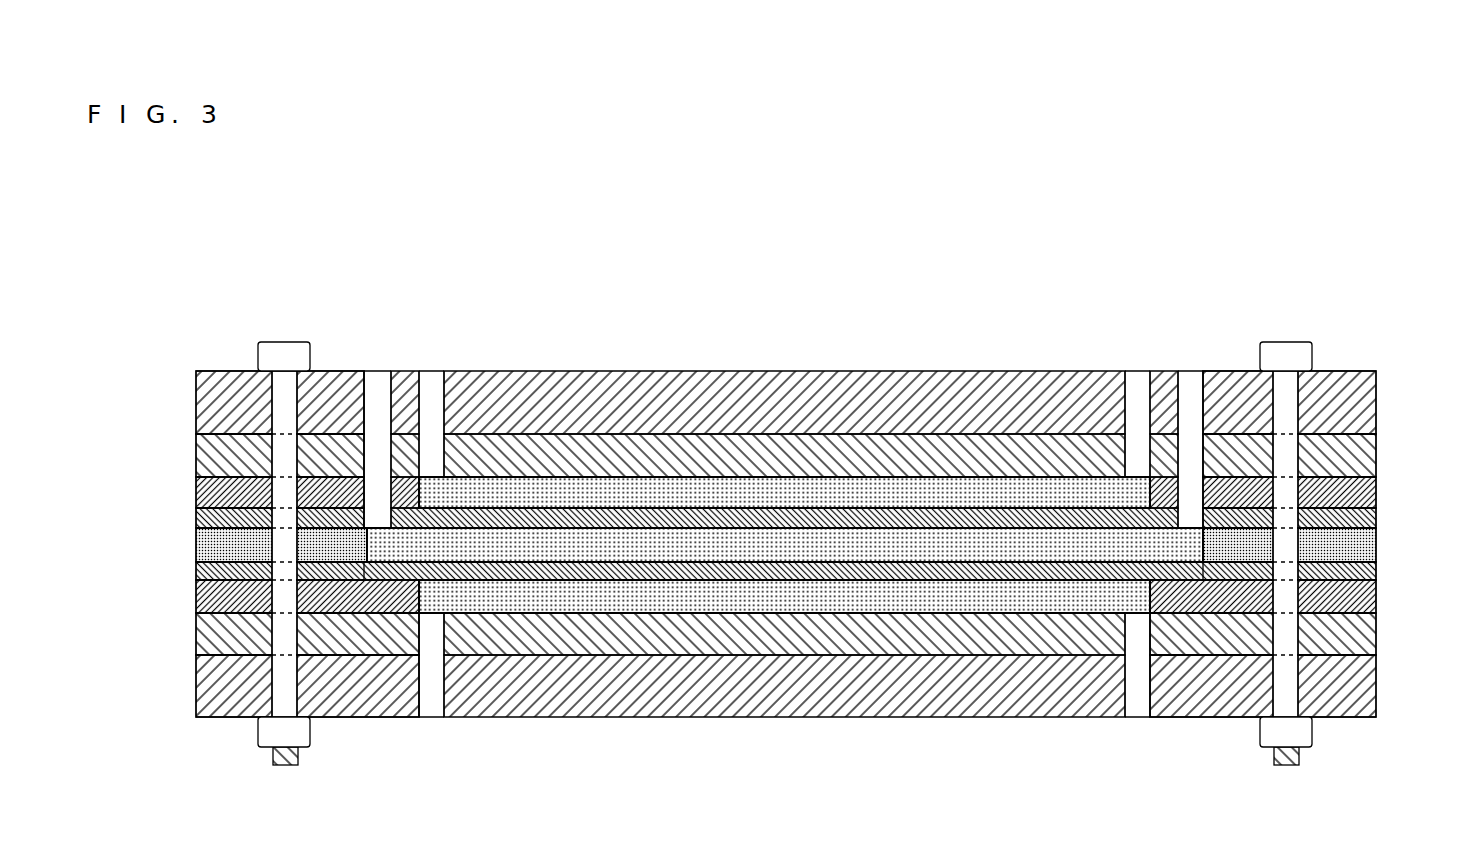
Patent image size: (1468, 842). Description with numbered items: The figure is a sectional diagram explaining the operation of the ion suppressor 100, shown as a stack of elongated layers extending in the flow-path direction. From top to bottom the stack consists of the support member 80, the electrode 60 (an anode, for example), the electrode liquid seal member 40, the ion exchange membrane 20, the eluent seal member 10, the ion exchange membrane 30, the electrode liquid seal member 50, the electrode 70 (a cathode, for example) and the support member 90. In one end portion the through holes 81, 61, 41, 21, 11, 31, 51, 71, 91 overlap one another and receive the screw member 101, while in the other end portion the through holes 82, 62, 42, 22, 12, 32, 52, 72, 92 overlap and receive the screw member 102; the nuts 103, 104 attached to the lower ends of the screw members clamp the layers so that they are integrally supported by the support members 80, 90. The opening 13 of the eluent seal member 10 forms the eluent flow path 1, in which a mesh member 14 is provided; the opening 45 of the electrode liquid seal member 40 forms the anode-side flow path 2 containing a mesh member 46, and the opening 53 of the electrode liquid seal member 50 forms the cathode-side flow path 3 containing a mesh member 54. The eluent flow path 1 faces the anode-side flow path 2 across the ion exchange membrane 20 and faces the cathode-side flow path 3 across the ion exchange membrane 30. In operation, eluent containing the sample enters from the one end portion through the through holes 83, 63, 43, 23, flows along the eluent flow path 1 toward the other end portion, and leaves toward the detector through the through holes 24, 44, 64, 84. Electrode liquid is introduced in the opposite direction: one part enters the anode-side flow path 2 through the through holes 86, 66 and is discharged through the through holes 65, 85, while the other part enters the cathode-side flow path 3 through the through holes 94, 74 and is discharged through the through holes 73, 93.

The eluent flow path 1 is at (831, 555).
The anode-side flow path 2 is at (813, 487).
The cathode-side flow path 3 is at (891, 603).
The eluent seal member 10 is at (350, 548).
The through hole 11 is at (288, 541).
The through hole 12 is at (1281, 541).
The opening 13 is at (727, 528).
The mesh member 14 is at (746, 542).
The ion exchange membrane 20 is at (985, 522).
The through hole 21 is at (288, 513).
The through hole 22 is at (1281, 513).
The through hole 23 is at (378, 520).
The through hole 24 is at (1203, 518).
The ion exchange membrane 30 is at (613, 572).
The through hole 31 is at (288, 568).
The through hole 32 is at (1281, 568).
The electrode liquid seal member 40 is at (1248, 493).
The through hole 41 is at (288, 487).
The through hole 42 is at (1281, 487).
The through hole 43 is at (376, 493).
The through hole 44 is at (1195, 494).
The opening 45 is at (601, 479).
The mesh member 46 is at (618, 492).
The electrode liquid seal member 50 is at (400, 597).
The through hole 51 is at (288, 591).
The through hole 52 is at (1281, 591).
The opening 53 is at (968, 608).
The mesh member 54 is at (1030, 598).
The electrode 60 is at (938, 450).
The through hole 61 is at (288, 451).
The through hole 62 is at (1281, 451).
The through hole 63 is at (370, 447).
The through hole 64 is at (1198, 447).
The through hole 65 is at (433, 453).
The through hole 66 is at (1106, 444).
The electrode 70 is at (667, 633).
The through hole 71 is at (288, 628).
The through hole 72 is at (1281, 628).
The through hole 73 is at (433, 637).
The through hole 74 is at (1132, 637).
The support member 80 is at (885, 403).
The through hole 81 is at (288, 399).
The through hole 82 is at (1281, 399).
The through hole 83 is at (383, 392).
The through hole 84 is at (1190, 390).
The through hole 85 is at (433, 400).
The through hole 86 is at (1132, 400).
The support member 90 is at (732, 687).
The through hole 91 is at (288, 682).
The through hole 92 is at (1281, 682).
The through hole 93 is at (433, 688).
The through hole 94 is at (1132, 688).
The ion suppressor 100 is at (1419, 286).
The screw member 101 is at (285, 342).
The screw member 102 is at (1287, 342).
The nut 103 is at (258, 732).
The nut 104 is at (1312, 732).